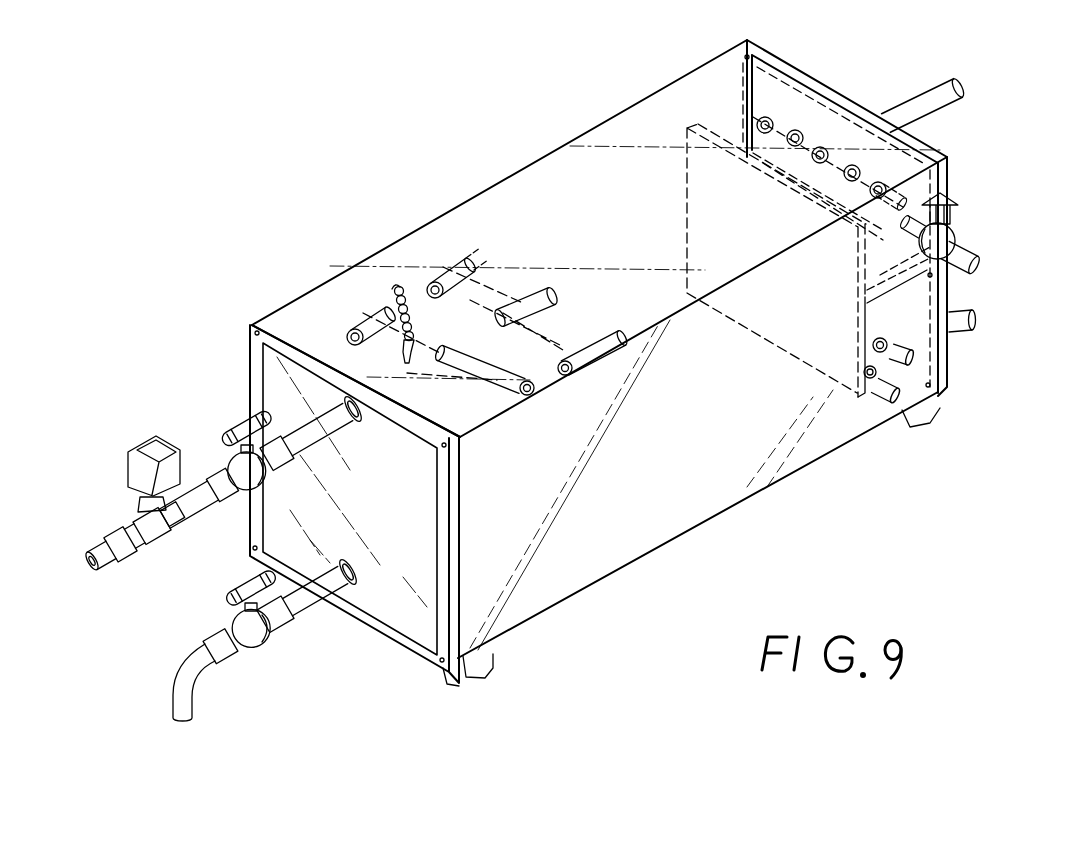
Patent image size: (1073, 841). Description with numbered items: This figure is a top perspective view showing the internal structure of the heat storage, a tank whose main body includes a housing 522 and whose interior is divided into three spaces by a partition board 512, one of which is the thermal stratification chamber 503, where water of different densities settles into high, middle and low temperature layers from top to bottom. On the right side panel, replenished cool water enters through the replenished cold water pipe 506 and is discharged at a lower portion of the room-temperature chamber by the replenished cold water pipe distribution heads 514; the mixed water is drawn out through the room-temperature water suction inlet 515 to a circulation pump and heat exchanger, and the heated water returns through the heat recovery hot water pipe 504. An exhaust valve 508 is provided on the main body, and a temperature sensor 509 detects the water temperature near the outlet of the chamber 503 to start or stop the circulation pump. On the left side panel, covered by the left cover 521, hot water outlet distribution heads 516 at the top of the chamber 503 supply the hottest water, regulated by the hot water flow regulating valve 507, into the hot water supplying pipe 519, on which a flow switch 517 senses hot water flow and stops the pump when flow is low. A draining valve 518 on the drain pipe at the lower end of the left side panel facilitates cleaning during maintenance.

The thermal stratification chamber 503 is at (652, 328).
The heat recovery hot water pipe 504 is at (928, 105).
The replenished cold water pipe 506 is at (970, 317).
The hot water flow regulating valve 507 is at (232, 420).
The exhaust valve 508 is at (945, 220).
The temperature sensor 509 is at (395, 350).
The partition board 512 is at (841, 383).
The replenished cold water pipe distribution heads 514 is at (903, 363).
The room-temperature water suction inlet 515 is at (877, 390).
The hot water outlet distribution heads 516 is at (363, 325).
The flow switch 517 is at (135, 477).
The draining valve 518 is at (257, 657).
The hot water supplying pipe 519 is at (93, 545).
The left cover 521 is at (377, 570).
The housing 522 is at (553, 583).